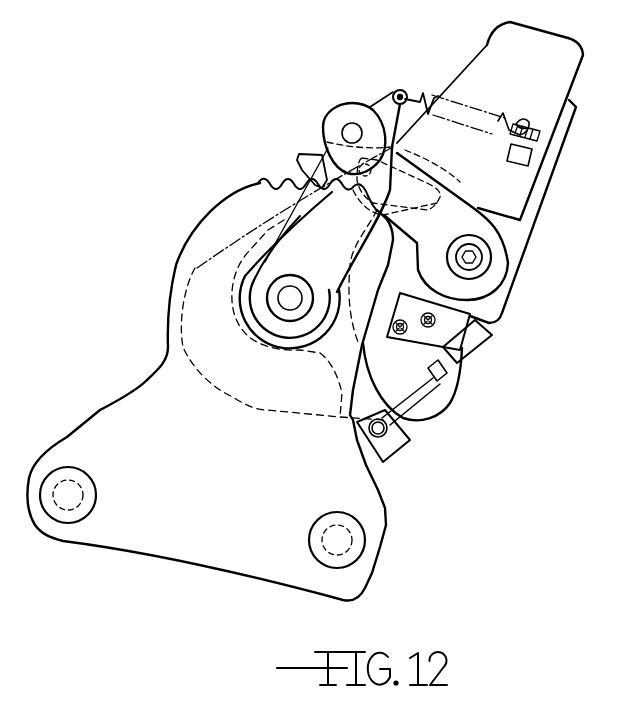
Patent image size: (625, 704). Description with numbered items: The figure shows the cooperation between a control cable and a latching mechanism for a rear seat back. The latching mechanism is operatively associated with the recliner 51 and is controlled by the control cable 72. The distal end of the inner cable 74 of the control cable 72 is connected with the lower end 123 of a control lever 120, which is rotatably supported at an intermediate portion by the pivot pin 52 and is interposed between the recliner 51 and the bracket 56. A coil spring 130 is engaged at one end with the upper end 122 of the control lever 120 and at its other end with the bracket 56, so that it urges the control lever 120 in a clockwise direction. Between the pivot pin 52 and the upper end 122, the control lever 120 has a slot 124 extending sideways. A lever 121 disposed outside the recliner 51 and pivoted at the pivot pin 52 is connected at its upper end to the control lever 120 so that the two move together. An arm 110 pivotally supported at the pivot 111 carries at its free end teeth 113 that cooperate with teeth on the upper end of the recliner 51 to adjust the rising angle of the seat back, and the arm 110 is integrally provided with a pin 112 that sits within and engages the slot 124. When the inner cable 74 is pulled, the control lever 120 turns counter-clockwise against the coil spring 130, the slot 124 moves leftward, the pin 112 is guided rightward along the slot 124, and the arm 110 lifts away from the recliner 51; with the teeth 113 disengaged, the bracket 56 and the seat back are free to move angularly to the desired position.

The recliner 51 is at (200, 537).
The pivot pin 52 is at (290, 298).
The bracket 56 is at (500, 184).
The control cable 72 is at (488, 332).
The inner cable 74 is at (433, 380).
The arm 110 is at (493, 243).
The pivot of arm 111 is at (477, 258).
The pin 112 is at (333, 157).
The teeth 113 is at (297, 165).
The control lever 120 is at (370, 396).
The lever 121 is at (300, 242).
The upper end of control lever 122 is at (396, 90).
The lower end of control lever 123 is at (397, 450).
The slot 124 is at (462, 182).
The coil spring 130 is at (463, 100).